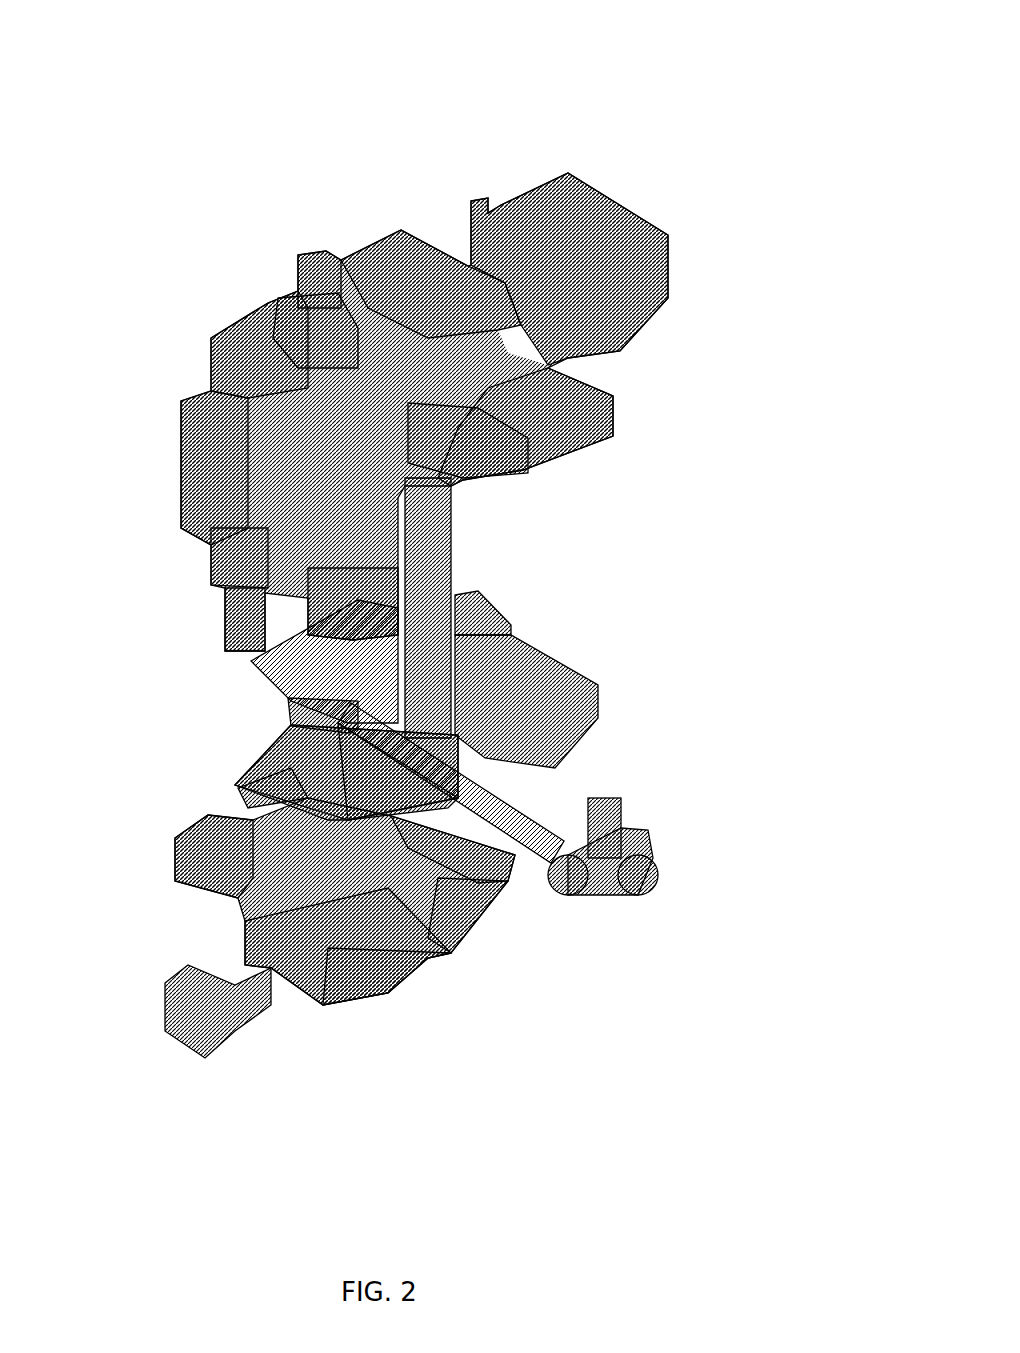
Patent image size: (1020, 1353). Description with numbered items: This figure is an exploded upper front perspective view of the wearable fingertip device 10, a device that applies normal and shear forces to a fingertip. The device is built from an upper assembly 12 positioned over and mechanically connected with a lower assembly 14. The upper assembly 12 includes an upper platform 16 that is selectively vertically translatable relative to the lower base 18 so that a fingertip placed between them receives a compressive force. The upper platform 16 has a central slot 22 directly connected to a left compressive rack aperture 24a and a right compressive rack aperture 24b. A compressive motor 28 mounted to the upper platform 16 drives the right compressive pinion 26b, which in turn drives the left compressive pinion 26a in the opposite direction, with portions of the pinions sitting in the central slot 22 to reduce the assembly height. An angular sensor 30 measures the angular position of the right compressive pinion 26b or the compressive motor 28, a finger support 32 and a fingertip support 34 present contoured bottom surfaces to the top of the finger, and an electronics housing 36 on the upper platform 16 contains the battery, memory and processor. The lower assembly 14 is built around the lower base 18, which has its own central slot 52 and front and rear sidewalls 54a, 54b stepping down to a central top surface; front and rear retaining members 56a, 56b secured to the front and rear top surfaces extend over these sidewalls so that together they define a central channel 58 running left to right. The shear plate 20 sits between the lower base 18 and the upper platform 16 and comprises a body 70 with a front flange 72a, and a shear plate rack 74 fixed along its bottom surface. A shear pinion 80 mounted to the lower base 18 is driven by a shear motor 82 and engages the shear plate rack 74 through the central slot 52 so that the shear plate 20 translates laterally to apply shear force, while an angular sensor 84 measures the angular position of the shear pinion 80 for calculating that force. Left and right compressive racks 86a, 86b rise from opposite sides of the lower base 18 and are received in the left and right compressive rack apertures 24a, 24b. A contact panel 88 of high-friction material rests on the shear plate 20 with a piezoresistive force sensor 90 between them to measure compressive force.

The wearable fingertip device 10 is at (748, 88).
The upper assembly 12 is at (755, 196).
The lower assembly 14 is at (705, 842).
The upper platform 16 is at (172, 388).
The lower base 18 is at (357, 995).
The shear plate 20 is at (222, 777).
The central slot 22 is at (477, 483).
The left compressive rack aperture 24a is at (232, 317).
The right compressive rack aperture 24b is at (425, 420).
The left compressive pinion 26a is at (277, 295).
The right compressive pinion 26b is at (425, 420).
The compressive motor 28 is at (605, 185).
The angular sensor 30 is at (178, 493).
The finger support 32 is at (233, 560).
The fingertip support 34 is at (203, 553).
The electronics housing 36 is at (393, 220).
The central slot 52 is at (400, 900).
The front sidewall 54a is at (383, 957).
The rear sidewall 54b is at (490, 873).
The front retaining member 56a is at (200, 822).
The rear retaining member 56b is at (505, 613).
The central channel 58 is at (455, 890).
The body 70 is at (267, 747).
The front flange 72a is at (253, 783).
The shear plate rack 74 is at (380, 840).
The shear pinion 80 is at (380, 840).
The shear motor 82 is at (590, 692).
The angular sensor 84 is at (178, 1022).
The left compressive rack 86a is at (213, 625).
The right compressive rack 86b is at (455, 540).
The contact panel 88 is at (280, 648).
The piezoresistive force sensor 90 is at (280, 707).